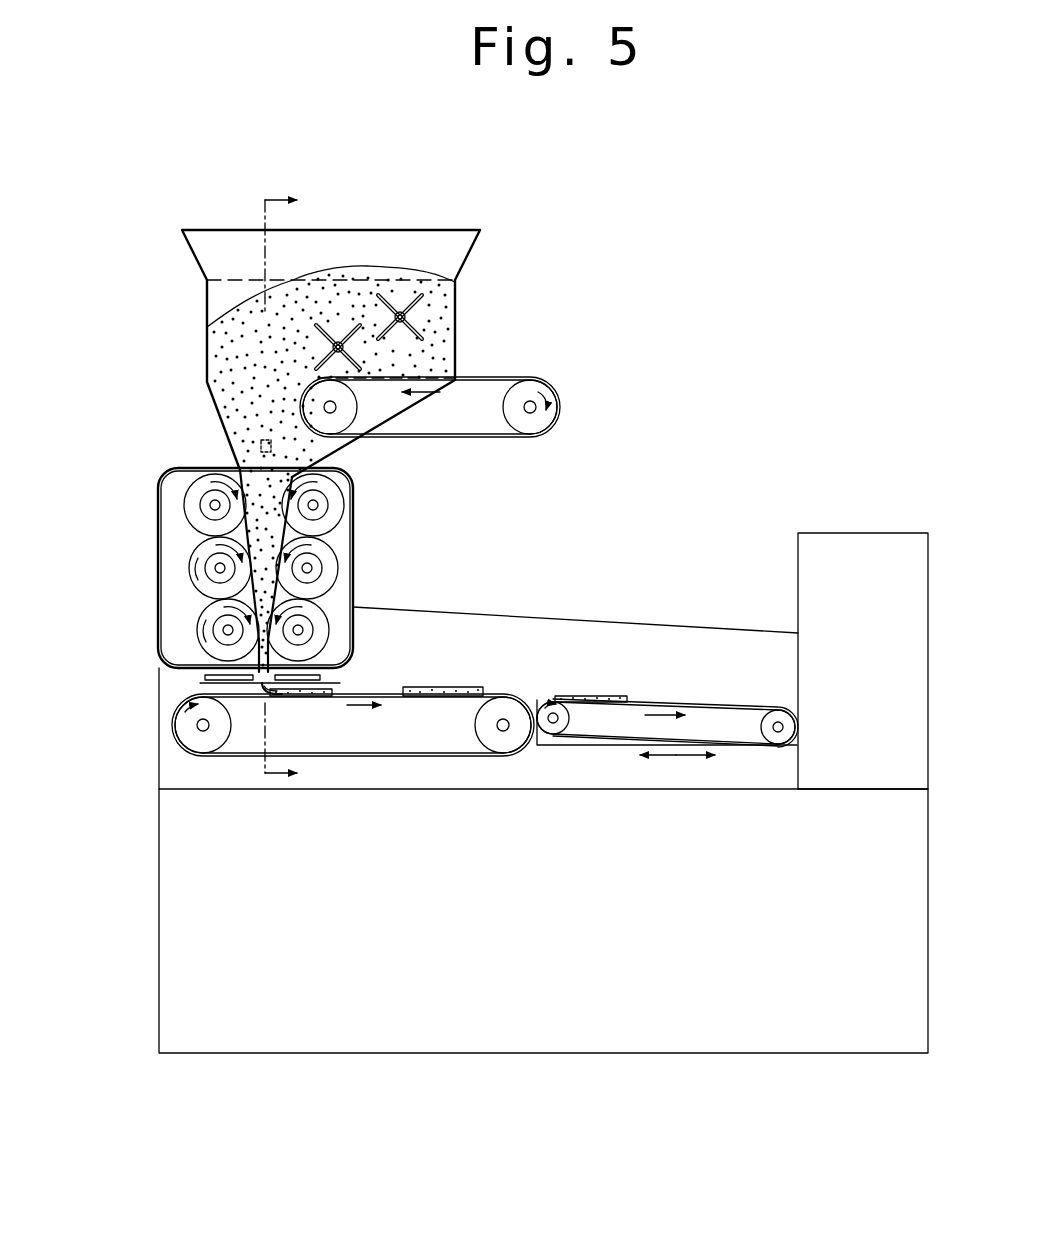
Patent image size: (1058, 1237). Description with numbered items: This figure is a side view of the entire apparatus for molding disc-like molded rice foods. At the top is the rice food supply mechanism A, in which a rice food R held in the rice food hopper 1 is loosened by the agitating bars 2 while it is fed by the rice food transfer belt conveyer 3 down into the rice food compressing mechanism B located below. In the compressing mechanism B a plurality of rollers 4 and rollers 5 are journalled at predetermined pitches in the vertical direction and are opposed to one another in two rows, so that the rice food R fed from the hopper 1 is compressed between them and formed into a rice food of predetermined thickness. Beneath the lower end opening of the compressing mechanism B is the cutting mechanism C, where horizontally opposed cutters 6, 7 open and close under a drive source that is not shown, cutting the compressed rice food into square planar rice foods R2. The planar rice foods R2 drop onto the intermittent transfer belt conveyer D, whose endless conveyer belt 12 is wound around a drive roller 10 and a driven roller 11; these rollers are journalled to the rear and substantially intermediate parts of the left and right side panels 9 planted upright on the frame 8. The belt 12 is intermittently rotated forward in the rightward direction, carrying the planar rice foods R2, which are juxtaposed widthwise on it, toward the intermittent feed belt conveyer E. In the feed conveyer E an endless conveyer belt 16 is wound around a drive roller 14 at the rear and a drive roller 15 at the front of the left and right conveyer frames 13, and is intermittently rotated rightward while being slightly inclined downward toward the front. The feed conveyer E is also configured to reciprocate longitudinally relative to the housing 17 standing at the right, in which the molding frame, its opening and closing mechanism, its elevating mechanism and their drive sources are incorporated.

The rice food hopper 1 is at (193, 265).
The agitating bar 2 is at (343, 340).
The rice food transfer belt conveyer 3 is at (513, 380).
The roller 4 is at (188, 491).
The roller 5 is at (333, 490).
The cutter 6 is at (240, 681).
The cutter 7 is at (323, 676).
The frame 8 is at (159, 904).
The side panel 9 is at (632, 633).
The drive roller 10 is at (192, 742).
The driven roller 11 is at (497, 748).
The endless conveyer belt 12 is at (427, 756).
The conveyer frame 13 is at (588, 747).
The drive roller 14 is at (553, 735).
The drive roller 15 is at (778, 745).
The endless conveyer belt 16 is at (743, 708).
The housing 17 is at (862, 540).
The rice food R is at (217, 340).
The planar rice food R2 is at (448, 697).
The rice food supply mechanism A is at (445, 176).
The rice food compressing mechanism B is at (186, 602).
The cutting mechanism C is at (190, 680).
The intermittent transfer belt conveyer D is at (358, 757).
The intermittent feed belt conveyer E is at (661, 766).